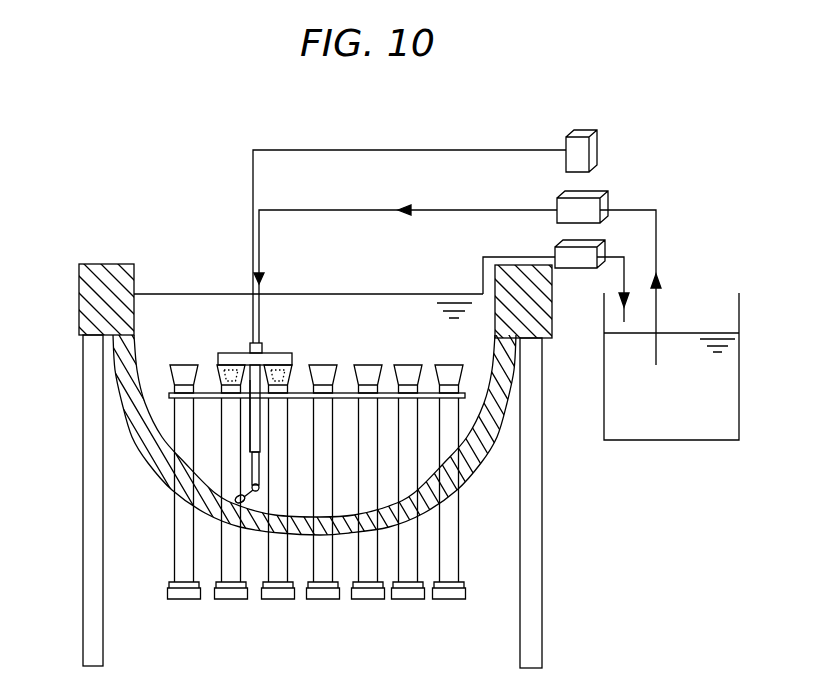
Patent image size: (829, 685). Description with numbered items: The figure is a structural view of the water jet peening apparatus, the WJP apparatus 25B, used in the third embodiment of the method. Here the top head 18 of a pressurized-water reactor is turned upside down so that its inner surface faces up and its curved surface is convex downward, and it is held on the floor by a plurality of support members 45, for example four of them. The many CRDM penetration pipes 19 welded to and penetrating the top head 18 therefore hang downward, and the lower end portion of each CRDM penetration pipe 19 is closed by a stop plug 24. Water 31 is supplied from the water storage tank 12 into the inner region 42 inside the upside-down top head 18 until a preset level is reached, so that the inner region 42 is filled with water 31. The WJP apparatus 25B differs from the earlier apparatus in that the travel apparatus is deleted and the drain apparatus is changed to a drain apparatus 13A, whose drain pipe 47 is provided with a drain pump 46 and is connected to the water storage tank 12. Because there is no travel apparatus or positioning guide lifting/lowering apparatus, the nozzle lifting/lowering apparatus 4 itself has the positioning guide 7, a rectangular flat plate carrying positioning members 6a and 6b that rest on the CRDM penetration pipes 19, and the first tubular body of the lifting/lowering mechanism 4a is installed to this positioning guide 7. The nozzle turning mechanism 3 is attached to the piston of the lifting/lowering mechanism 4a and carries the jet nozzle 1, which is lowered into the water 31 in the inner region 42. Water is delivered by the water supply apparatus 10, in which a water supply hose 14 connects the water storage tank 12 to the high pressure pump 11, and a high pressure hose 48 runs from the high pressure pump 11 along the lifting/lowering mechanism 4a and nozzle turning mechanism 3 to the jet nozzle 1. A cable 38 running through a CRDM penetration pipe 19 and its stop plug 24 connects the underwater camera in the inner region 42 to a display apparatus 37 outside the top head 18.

The jet nozzle 1 is at (243, 503).
The nozzle turning mechanism 3 is at (260, 468).
The nozzle lifting/lowering apparatus 4 is at (262, 420).
The lifting/lowering mechanism 4a is at (250, 437).
The positioning member 6a is at (222, 371).
The positioning member 6b is at (288, 372).
The positioning guide 7 is at (281, 348).
The water supply apparatus 10 is at (323, 208).
The high pressure pump 11 is at (605, 195).
The water storage tank 12 is at (741, 388).
The drain apparatus 13A is at (627, 272).
The water supply hose 14 is at (656, 232).
The top head 18 is at (146, 449).
The CRDM penetration pipe 19 is at (459, 553).
The stop plug 24 is at (229, 597).
The WJP apparatus 25B is at (222, 190).
The water 31 is at (378, 293).
The display apparatus 37 is at (595, 130).
The cable 38 is at (388, 150).
The inner region 42 is at (473, 353).
The support member 45 is at (83, 545).
The drain pump 46 is at (575, 270).
The drain pipe 47 is at (495, 257).
The high pressure hose 48 is at (466, 207).